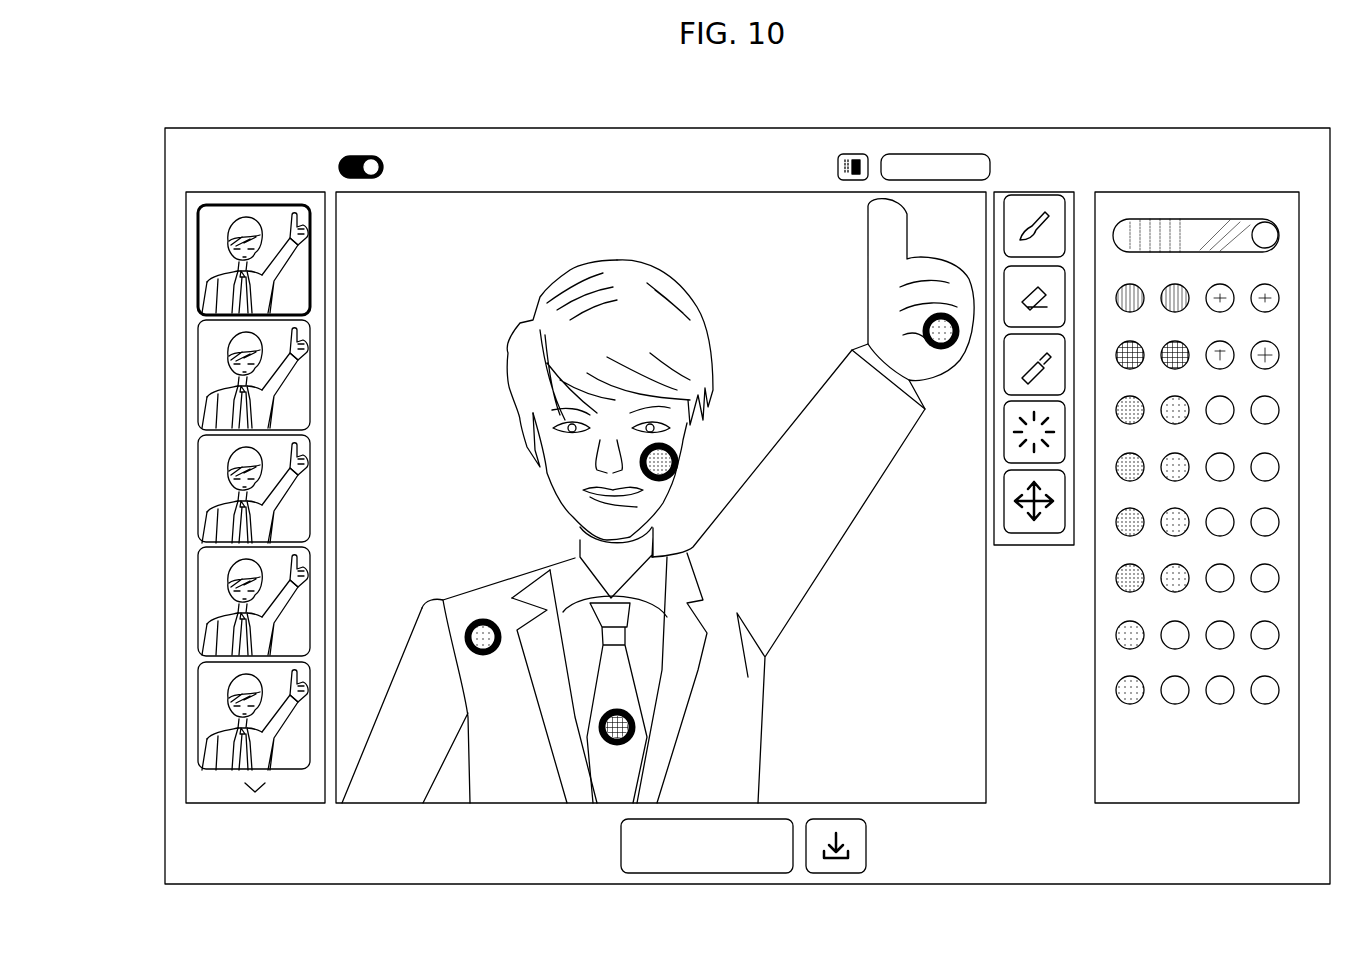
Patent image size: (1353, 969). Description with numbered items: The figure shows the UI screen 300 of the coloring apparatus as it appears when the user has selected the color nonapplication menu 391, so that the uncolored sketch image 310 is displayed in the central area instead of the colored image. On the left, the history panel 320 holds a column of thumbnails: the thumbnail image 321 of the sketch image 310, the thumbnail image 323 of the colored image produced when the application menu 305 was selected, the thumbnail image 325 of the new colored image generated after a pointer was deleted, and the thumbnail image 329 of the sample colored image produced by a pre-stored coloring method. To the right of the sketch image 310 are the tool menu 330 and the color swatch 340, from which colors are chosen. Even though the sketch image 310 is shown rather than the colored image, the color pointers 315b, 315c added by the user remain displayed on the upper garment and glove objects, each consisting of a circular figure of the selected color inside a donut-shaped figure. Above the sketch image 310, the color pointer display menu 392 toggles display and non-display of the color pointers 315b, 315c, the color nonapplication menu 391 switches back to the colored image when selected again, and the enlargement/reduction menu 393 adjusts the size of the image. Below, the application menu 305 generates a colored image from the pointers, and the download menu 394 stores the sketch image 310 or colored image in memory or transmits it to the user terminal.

The UI screen 300 is at (1243, 128).
The application menu 305 is at (675, 875).
The sketch image 310 is at (666, 507).
The color pointer 315b is at (482, 655).
The color pointer 315c is at (948, 316).
The history panel 320 is at (216, 446).
The thumbnail image 321 is at (198, 488).
The thumbnail image 323 is at (198, 376).
The thumbnail image 325 is at (198, 250).
The thumbnail image 329 is at (193, 546).
The tool menu 330 is at (1028, 191).
The color swatch 340 is at (1163, 191).
The color nonapplication menu 391 is at (852, 153).
The color pointer display menu 392 is at (352, 155).
The enlargement/reduction menu 393 is at (915, 153).
The download menu 394 is at (833, 875).